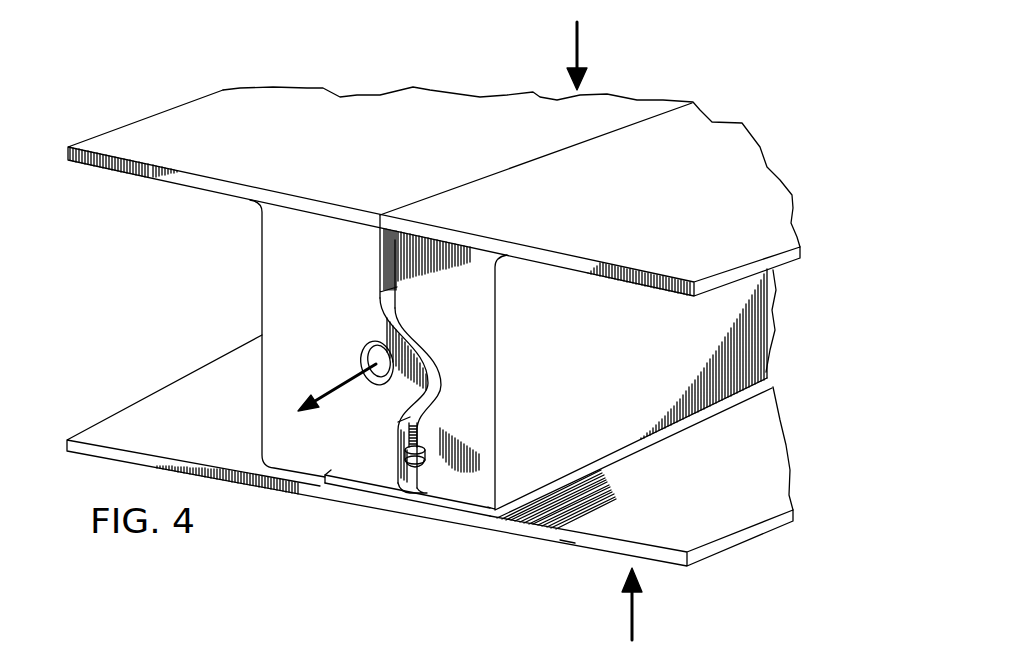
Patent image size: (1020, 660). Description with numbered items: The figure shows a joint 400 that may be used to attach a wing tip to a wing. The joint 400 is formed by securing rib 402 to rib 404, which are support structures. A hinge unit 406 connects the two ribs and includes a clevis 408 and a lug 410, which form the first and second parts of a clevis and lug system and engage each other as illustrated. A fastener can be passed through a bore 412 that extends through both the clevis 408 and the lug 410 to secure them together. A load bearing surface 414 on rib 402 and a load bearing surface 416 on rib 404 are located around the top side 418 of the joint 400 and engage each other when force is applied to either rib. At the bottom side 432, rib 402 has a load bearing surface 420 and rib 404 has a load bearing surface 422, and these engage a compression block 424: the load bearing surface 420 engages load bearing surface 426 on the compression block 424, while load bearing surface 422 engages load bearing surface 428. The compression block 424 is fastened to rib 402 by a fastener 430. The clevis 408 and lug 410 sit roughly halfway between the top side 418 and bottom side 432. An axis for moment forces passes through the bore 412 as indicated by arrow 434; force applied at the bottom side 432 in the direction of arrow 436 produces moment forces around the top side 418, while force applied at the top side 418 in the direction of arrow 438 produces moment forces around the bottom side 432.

The joint 400 is at (158, 67).
The rib 402 is at (130, 123).
The rib 404 is at (748, 543).
The hinge unit 406 is at (278, 467).
The clevis 408 is at (418, 336).
The lug 410 is at (468, 377).
The bore 412 is at (373, 378).
The load bearing surface 414 is at (410, 210).
The load bearing surface 416 is at (377, 228).
The top side 418 is at (366, 100).
The load bearing surface 420 is at (326, 498).
The load bearing surface 422 is at (410, 510).
The compression block 424 is at (370, 502).
The load bearing surface 426 is at (322, 484).
The load bearing surface 428 is at (418, 504).
The fastener 430 is at (430, 421).
The bottom side 432 is at (567, 548).
The arrow 434 is at (330, 390).
The arrow 436 is at (634, 618).
The arrow 438 is at (580, 45).